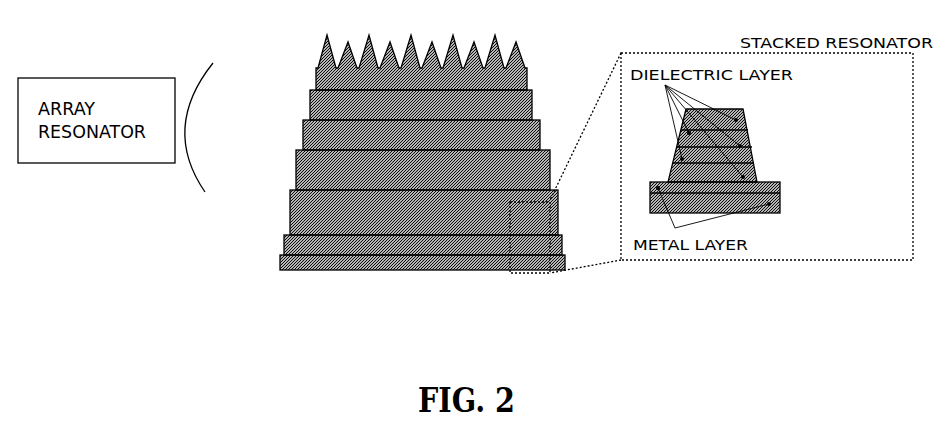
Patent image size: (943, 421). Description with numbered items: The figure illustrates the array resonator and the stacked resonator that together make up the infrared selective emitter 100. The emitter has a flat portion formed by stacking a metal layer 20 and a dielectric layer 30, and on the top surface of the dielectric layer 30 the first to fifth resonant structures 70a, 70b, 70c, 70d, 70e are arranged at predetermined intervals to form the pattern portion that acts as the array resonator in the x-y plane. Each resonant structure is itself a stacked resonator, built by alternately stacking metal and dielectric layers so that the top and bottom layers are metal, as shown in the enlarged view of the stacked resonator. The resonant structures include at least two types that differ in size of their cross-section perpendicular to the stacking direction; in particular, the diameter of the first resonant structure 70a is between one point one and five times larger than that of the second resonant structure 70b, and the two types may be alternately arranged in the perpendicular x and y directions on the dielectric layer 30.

The infrared selective emitter 100 is at (379, 177).
The metal layer 20 is at (296, 263).
The dielectric layer 30 is at (305, 242).
The first resonant structure 70a is at (282, 218).
The second resonant structure 70b is at (289, 177).
The third resonant structure 70c is at (302, 130).
The fourth resonant structure 70d is at (311, 95).
The fifth resonant structure 70e is at (317, 60).